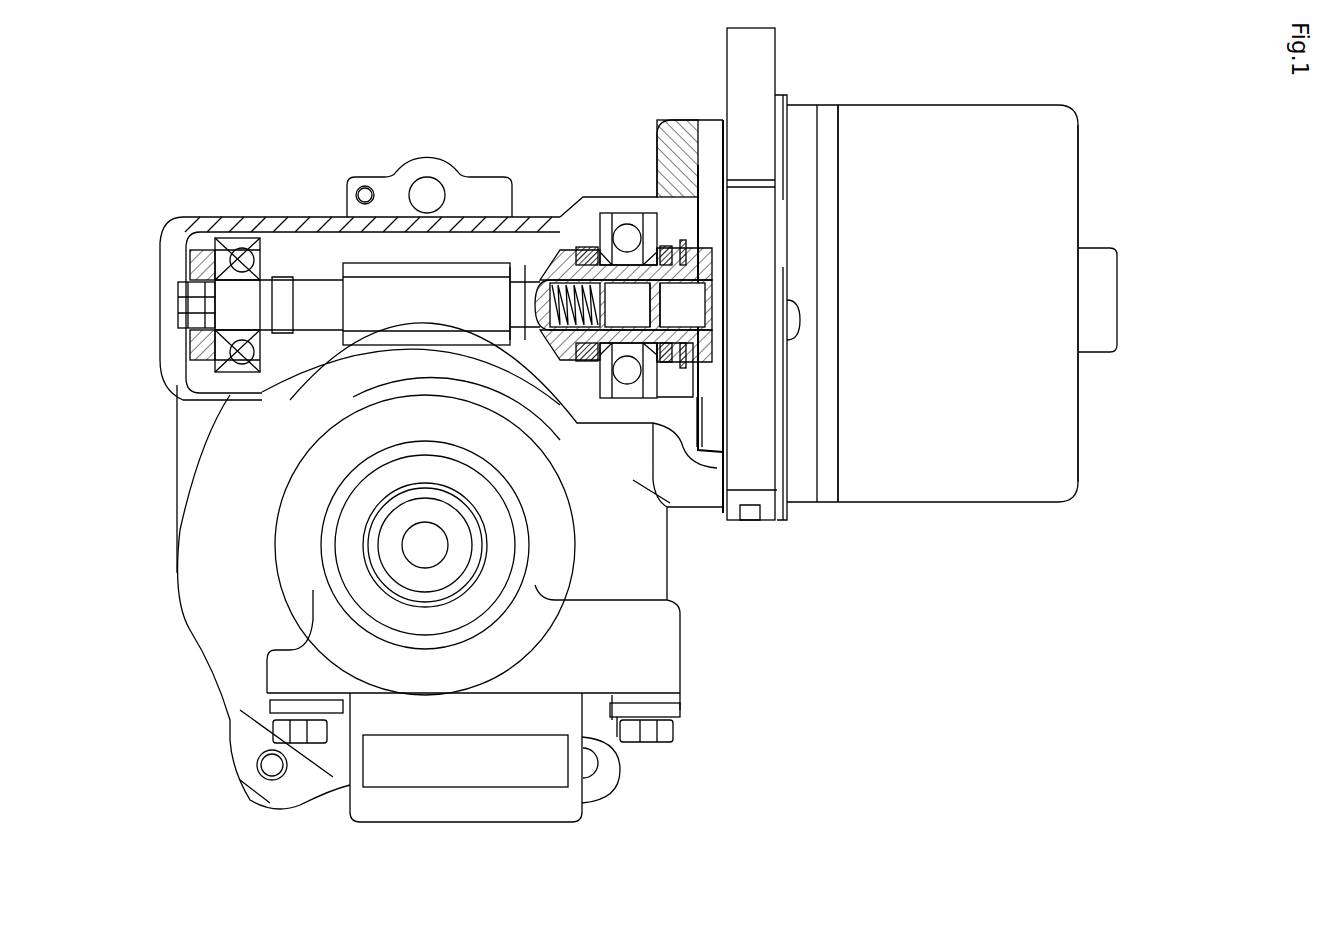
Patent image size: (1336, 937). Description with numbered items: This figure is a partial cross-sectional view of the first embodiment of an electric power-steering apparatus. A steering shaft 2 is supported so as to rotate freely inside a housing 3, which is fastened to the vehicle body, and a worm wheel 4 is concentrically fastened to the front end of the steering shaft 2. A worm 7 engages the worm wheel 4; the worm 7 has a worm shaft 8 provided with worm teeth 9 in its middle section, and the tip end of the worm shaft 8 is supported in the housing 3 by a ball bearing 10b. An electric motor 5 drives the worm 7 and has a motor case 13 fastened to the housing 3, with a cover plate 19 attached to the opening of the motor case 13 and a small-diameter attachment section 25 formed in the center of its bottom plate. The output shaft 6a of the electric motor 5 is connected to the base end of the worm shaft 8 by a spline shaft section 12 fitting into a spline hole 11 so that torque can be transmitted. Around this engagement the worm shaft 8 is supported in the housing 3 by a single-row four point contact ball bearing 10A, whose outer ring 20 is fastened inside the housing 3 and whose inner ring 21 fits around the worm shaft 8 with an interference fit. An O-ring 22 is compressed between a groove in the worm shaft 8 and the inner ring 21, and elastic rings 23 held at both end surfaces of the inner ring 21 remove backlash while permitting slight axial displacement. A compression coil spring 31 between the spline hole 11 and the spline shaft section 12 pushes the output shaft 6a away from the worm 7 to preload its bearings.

The steering shaft 2 is at (398, 565).
The housing 3 is at (223, 562).
The worm wheel 4 is at (250, 240).
The electric motor 5 is at (897, 127).
The output shaft 6a is at (692, 306).
The worm 7 is at (380, 303).
The worm shaft 8 is at (325, 307).
The worm teeth 9 is at (485, 268).
The single-row four point contact ball bearing 10A is at (611, 250).
The ball bearing 10b is at (235, 243).
The spline hole 11 is at (595, 262).
The spline shaft section 12 is at (632, 315).
The motor case 13 is at (1005, 158).
The cover plate 19 is at (803, 113).
The outer ring 20 is at (632, 242).
The inner ring 21 is at (652, 250).
The O-ring 22 is at (594, 236).
The elastic rings 23 is at (587, 245).
The small-diameter attachment section 25 is at (1103, 312).
The compression coil spring 31 is at (516, 272).